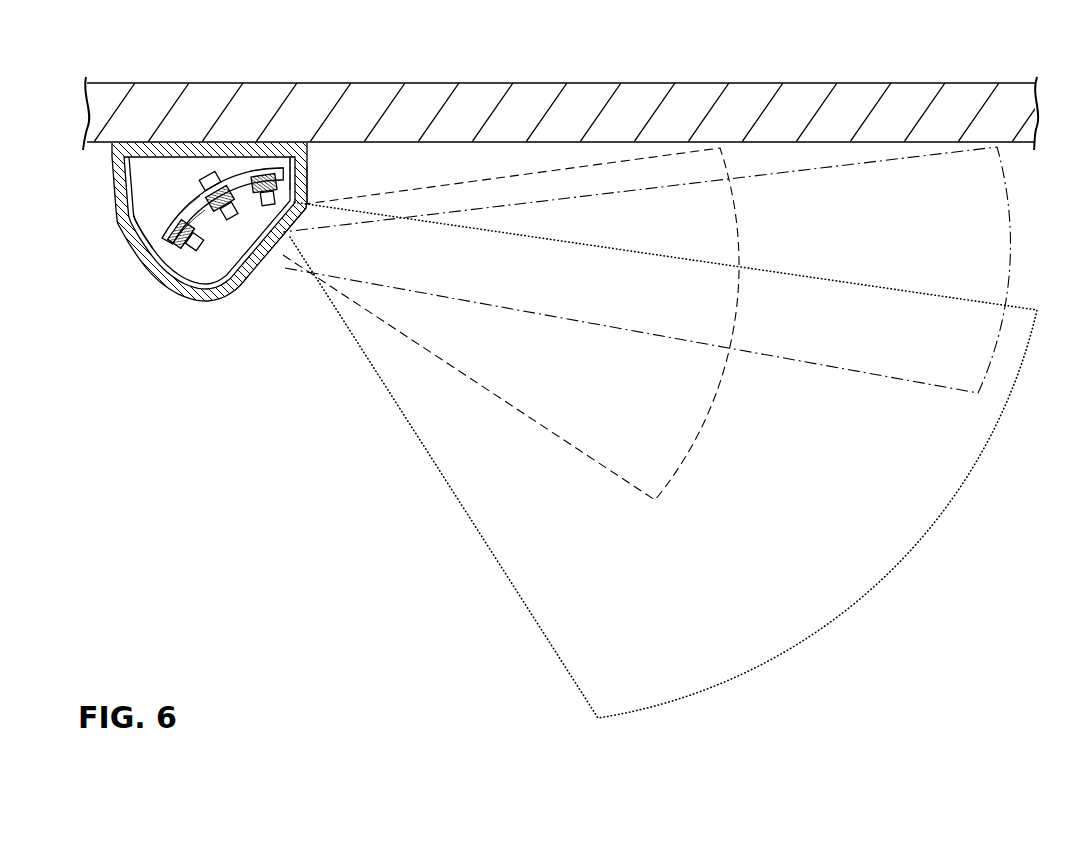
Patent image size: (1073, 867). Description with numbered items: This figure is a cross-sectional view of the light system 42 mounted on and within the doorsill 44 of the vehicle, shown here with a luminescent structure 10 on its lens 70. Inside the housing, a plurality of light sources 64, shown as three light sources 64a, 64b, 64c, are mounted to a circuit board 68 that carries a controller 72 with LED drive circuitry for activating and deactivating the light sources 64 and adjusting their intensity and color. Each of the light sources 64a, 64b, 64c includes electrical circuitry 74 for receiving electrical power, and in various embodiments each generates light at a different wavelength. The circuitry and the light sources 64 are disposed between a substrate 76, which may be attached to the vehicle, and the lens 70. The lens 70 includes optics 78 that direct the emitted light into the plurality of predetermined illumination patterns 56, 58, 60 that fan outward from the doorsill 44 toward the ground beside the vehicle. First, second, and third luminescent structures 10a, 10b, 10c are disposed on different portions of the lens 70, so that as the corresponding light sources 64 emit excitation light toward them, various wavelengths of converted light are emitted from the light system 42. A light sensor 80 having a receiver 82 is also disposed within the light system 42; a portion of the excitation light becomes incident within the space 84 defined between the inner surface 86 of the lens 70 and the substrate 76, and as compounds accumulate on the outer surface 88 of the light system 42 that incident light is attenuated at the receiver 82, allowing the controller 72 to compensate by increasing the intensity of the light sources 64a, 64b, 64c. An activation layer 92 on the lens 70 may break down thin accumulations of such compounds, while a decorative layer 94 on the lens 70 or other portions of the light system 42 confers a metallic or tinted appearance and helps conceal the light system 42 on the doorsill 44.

The luminescent structure 10 is at (228, 306).
The first luminescent structure 10a is at (310, 218).
The second luminescent structure 10b is at (268, 289).
The third luminescent structure 10c is at (255, 309).
The light system 42 is at (243, 303).
The doorsill 44 is at (577, 112).
The first illumination pattern 56 is at (483, 394).
The second illumination pattern 58 is at (465, 303).
The third illumination pattern 60 is at (457, 498).
The light sources 64 is at (182, 264).
The first light source 64a is at (212, 183).
The second light source 64b is at (163, 244).
The third light source 64c is at (289, 166).
The circuit board 68 is at (265, 150).
The lens 70 is at (300, 186).
The controller 72 is at (183, 203).
The electrical circuitry 74 is at (232, 156).
The substrate 76 is at (192, 176).
The optics 78 is at (308, 182).
The light sensor 80 is at (175, 212).
The receiver 82 is at (182, 228).
The space 84 is at (140, 180).
The inner surface 86 is at (305, 238).
The outer surface 88 is at (213, 226).
The activation layer 92 is at (236, 286).
The decorative layer 94 is at (140, 251).